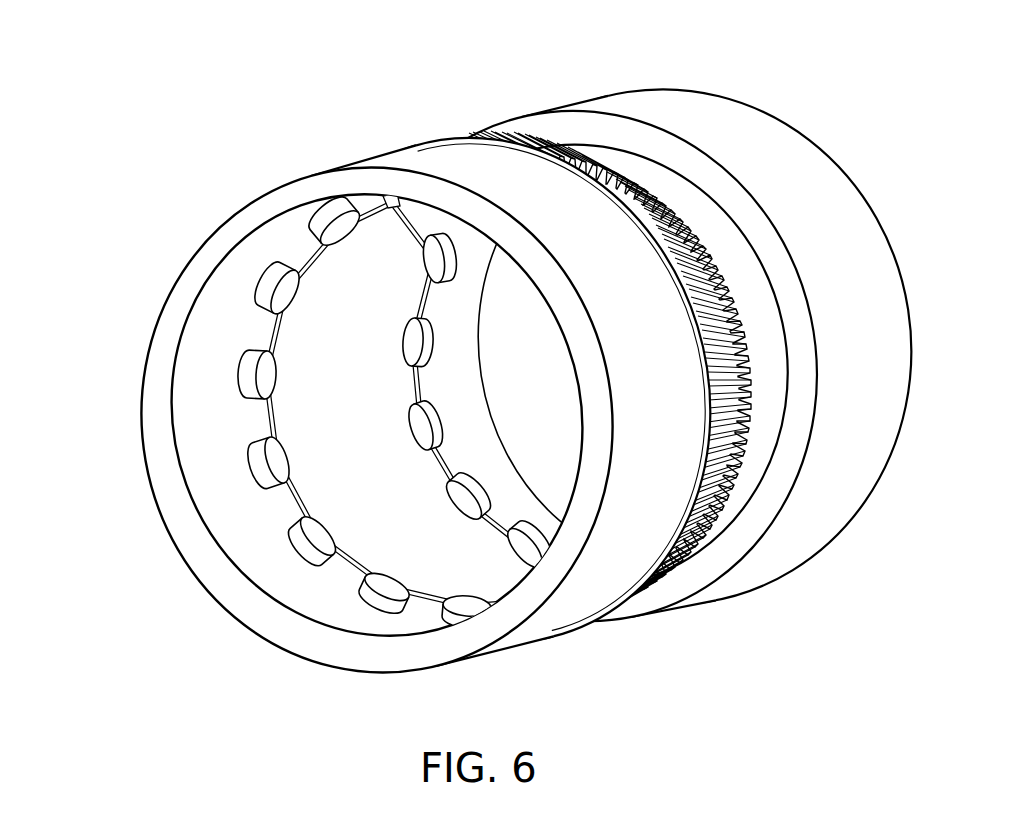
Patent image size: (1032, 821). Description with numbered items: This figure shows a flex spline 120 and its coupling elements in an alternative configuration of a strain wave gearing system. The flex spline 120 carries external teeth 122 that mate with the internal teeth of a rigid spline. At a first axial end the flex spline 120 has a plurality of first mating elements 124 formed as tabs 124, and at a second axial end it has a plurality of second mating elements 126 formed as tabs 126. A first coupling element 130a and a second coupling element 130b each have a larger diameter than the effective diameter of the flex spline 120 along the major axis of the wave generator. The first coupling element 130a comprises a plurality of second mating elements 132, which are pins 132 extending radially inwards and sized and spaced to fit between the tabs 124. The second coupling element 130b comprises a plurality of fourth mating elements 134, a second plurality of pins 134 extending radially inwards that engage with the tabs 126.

The flex spline 120 is at (461, 366).
The external teeth 122 is at (733, 430).
The first mating elements (tabs) 124 is at (415, 399).
The second mating elements (tabs) 126 is at (667, 347).
The first coupling element 130a is at (252, 526).
The second coupling element 130b is at (840, 273).
The second mating elements (pins) 132 is at (273, 372).
The fourth mating elements (pins) 134 is at (439, 258).